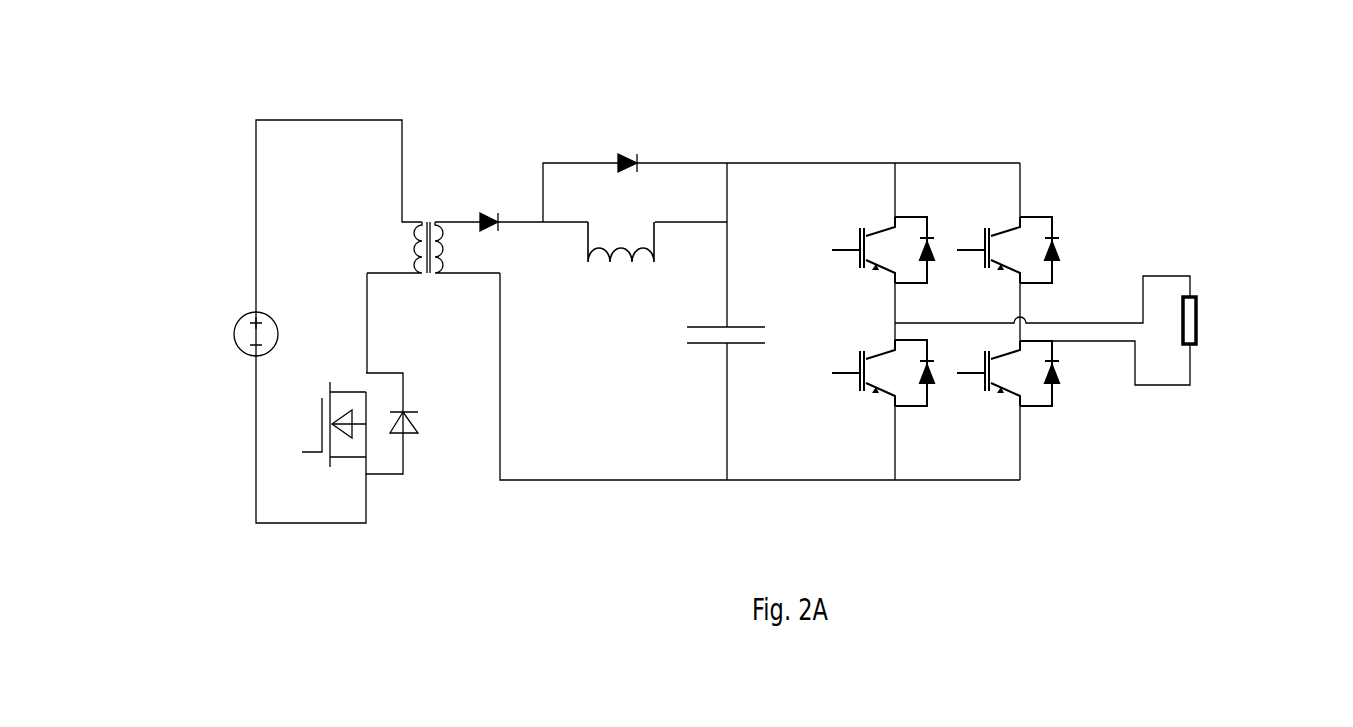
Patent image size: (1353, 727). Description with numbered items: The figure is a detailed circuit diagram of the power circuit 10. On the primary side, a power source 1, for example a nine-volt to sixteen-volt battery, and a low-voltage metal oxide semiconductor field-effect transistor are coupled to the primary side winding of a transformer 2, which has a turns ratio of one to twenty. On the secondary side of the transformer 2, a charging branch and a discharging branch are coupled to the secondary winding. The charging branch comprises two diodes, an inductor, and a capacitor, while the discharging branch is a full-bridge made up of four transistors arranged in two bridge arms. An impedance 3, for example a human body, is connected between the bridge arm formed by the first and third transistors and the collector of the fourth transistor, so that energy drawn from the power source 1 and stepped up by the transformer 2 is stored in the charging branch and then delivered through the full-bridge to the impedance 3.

The power circuit 10 is at (493, 105).
The power source 1 is at (197, 340).
The transformer 2 is at (433, 265).
The impedance 3 is at (1266, 320).